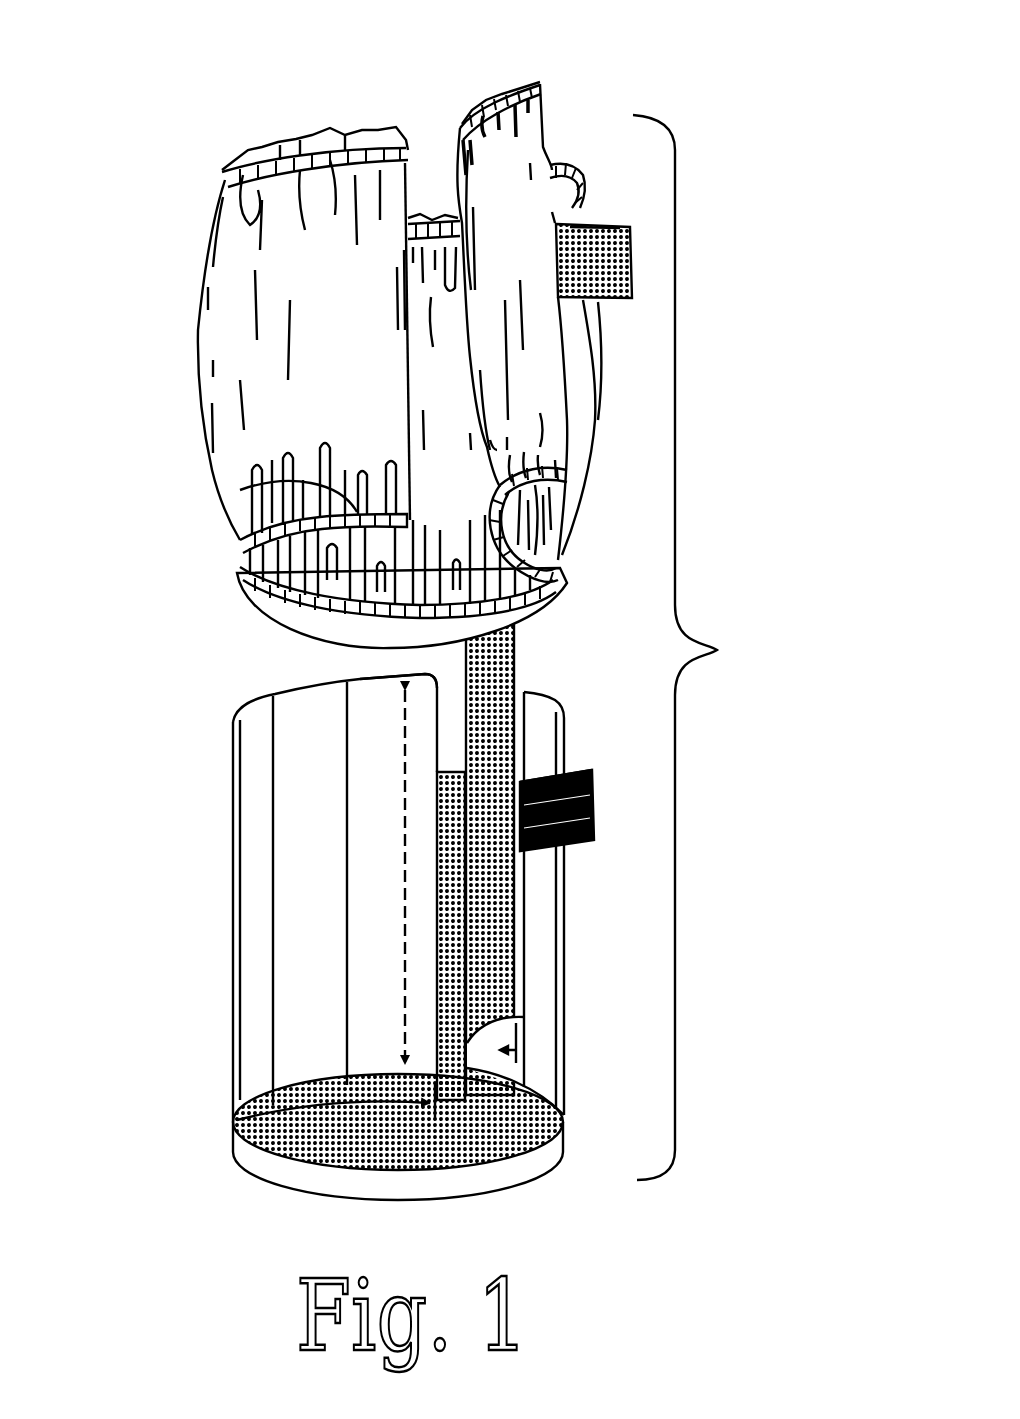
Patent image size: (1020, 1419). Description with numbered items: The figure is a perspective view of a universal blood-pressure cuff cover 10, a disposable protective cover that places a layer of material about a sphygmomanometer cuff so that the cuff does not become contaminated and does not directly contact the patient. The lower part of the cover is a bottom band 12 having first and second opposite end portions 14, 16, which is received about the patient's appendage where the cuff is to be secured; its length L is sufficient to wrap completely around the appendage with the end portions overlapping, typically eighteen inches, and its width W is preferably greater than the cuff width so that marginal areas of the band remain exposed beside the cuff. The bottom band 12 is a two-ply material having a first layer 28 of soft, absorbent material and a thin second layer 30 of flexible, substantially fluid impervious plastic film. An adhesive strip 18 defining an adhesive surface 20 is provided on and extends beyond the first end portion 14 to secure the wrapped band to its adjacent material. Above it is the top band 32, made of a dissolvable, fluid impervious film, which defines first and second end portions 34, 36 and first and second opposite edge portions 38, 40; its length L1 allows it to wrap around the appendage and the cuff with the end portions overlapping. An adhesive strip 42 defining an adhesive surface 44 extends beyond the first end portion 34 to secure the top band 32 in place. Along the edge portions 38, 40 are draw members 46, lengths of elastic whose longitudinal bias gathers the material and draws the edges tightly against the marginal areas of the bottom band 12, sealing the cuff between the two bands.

The blood-pressure cuff cover 10 is at (698, 647).
The bottom band 12 is at (243, 1010).
The first end portion 14 is at (516, 935).
The second end portion 16 is at (428, 666).
The adhesive strip 18 is at (594, 806).
The adhesive surface 20 is at (573, 777).
The first layer 28 is at (500, 666).
The second layer 30 is at (252, 775).
The top band 32 is at (192, 346).
The first end portion 34 is at (540, 326).
The second end portion 36 is at (408, 158).
The first edge portion 38 is at (242, 570).
The second edge portion 40 is at (217, 170).
The adhesive strip 42 is at (627, 261).
The adhesive surface 44 is at (603, 245).
The draw members 46 is at (282, 150).
The width W is at (403, 873).
The length L is at (300, 1195).
The length L1 is at (553, 583).